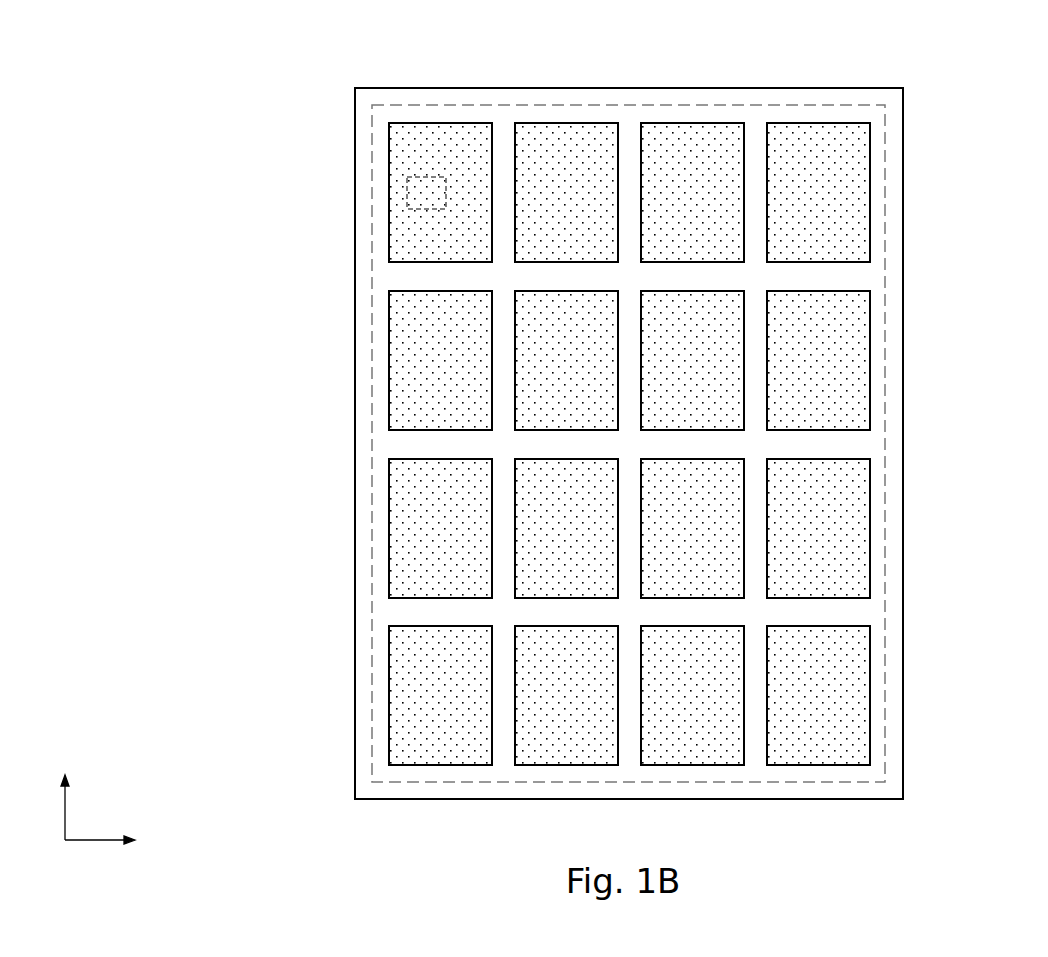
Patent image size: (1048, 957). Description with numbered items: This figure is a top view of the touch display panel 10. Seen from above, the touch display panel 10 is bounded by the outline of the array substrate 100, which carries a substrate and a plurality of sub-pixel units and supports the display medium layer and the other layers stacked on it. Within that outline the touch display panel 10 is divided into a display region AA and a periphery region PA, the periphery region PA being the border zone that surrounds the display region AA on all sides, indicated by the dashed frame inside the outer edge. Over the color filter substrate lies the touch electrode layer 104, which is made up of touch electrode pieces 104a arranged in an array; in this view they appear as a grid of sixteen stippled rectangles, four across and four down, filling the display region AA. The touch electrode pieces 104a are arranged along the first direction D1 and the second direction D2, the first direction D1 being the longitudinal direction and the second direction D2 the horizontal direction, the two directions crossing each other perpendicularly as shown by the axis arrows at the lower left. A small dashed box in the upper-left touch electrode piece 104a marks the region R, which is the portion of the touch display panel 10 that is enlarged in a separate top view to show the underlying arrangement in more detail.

The touch display panel 10 is at (160, 48).
The array substrate 100 is at (893, 112).
The touch electrode piece 104a is at (446, 145).
The touch electrode layer 104 is at (629, 444).
The display region AA is at (884, 160).
The periphery region PA is at (903, 200).
The region R is at (409, 190).
The first direction D1 is at (62, 791).
The second direction D2 is at (119, 842).